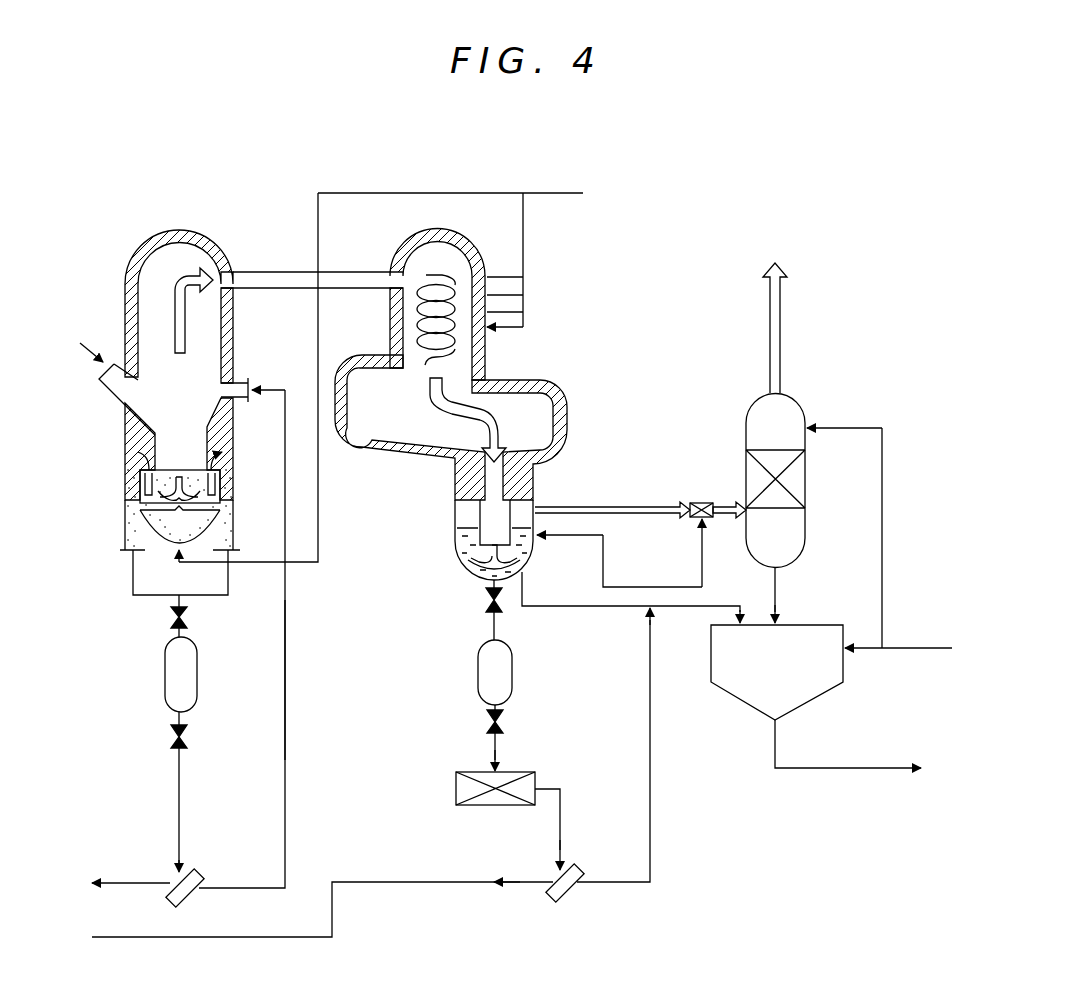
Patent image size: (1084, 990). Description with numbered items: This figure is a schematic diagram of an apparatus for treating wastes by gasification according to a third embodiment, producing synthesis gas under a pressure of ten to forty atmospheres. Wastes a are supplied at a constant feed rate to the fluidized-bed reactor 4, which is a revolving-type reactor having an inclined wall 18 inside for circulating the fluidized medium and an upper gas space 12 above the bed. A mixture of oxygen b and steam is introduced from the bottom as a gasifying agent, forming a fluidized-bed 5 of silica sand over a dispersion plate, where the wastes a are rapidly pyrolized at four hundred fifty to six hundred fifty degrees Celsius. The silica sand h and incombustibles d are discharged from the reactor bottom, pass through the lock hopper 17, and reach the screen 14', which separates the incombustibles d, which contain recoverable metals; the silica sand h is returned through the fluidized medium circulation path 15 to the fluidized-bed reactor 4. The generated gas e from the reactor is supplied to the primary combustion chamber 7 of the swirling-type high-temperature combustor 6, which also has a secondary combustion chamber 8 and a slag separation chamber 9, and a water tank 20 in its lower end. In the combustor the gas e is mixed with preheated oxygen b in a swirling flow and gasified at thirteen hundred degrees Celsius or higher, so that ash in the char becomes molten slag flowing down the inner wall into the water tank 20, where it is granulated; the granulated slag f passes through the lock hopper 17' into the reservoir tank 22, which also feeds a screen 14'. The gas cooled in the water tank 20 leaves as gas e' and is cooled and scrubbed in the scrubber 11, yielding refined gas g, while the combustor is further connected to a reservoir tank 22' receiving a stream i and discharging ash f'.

The fluidized-bed reactor 4 is at (235, 350).
The gas phase space of reactor 12 is at (137, 284).
The inclined wall 18 is at (143, 487).
The fluidized-bed 5 is at (227, 502).
The lock hopper 17 is at (207, 754).
The screen 14' is at (395, 865).
The fluidized medium circulation path 15 is at (287, 768).
The swirling-type high-temperature combustor 6 is at (450, 228).
The primary combustion chamber 7 is at (468, 364).
The secondary combustion chamber 8 is at (377, 428).
The slag separation chamber 9 is at (453, 515).
The water tank 20 is at (461, 565).
The lock hopper 17' is at (525, 705).
The reservoir tank 22 is at (521, 801).
The scrubber 11 is at (757, 422).
The reservoir tank 22' is at (777, 691).
The wastes a is at (84, 354).
The oxygen b is at (560, 193).
The incombustibles d is at (130, 882).
The gas generated in fluidized-bed reactor e is at (312, 255).
The gas generated in swirling-type high-temperature combustor e' is at (640, 518).
The granulated slag f is at (371, 772).
The ash f' is at (848, 743).
The refined gas g is at (781, 302).
The silica sand h is at (290, 680).
The feed stream i is at (918, 648).